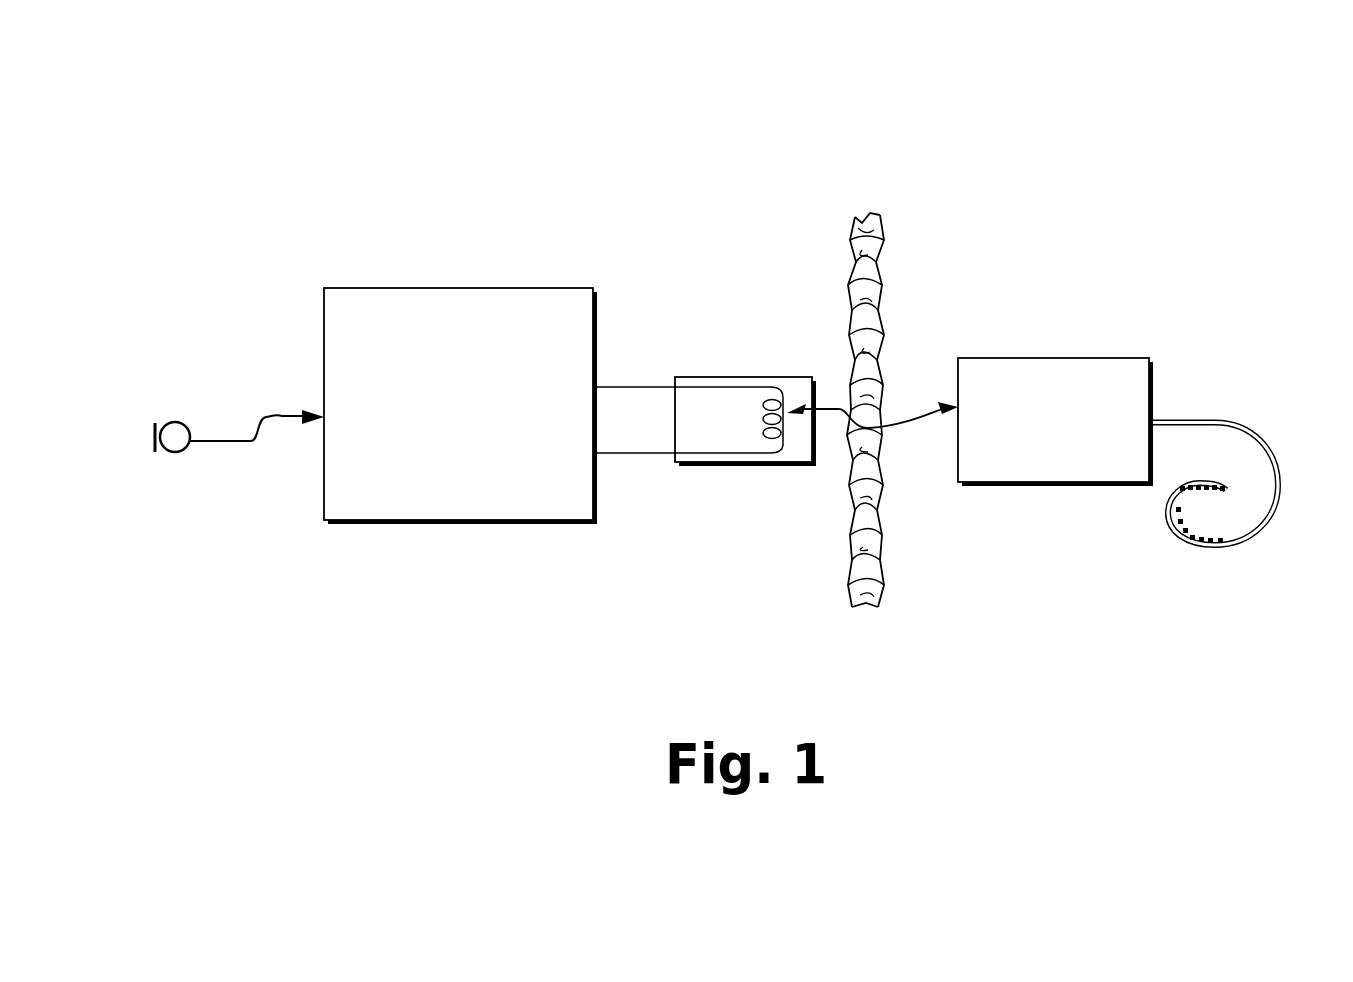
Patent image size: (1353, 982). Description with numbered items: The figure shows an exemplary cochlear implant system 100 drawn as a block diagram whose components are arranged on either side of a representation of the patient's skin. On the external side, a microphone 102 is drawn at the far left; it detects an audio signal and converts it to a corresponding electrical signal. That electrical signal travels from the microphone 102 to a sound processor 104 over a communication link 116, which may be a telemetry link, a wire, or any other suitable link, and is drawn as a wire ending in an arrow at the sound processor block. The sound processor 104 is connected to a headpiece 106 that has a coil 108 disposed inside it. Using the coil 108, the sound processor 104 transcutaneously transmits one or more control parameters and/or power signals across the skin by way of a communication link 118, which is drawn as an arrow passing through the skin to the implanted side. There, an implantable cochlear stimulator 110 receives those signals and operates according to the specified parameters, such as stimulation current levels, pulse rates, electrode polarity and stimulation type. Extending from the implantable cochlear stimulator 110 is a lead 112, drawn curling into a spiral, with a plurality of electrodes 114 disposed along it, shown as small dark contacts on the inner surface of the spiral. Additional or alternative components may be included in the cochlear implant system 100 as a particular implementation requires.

The cochlear implant system 100 is at (274, 136).
The microphone 102 is at (171, 452).
The sound processor 104 is at (438, 432).
The headpiece 106 is at (747, 377).
The coil 108 is at (771, 456).
The implantable cochlear stimulator 110 is at (1033, 447).
The lead 112 is at (1265, 522).
The electrodes 114 is at (1191, 541).
The communication link 116 is at (258, 442).
The communication link 118 is at (897, 414).